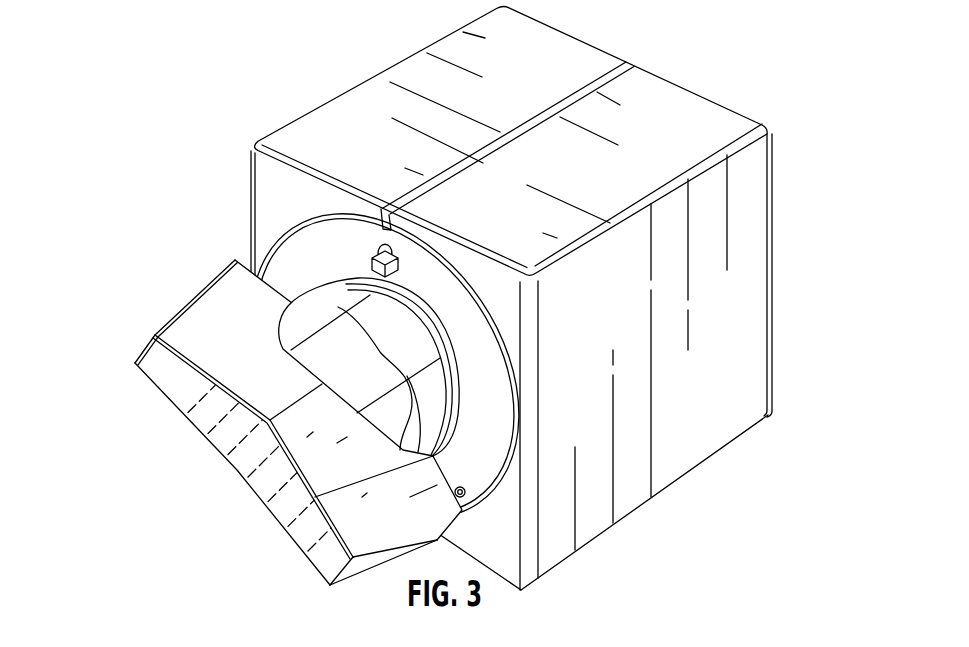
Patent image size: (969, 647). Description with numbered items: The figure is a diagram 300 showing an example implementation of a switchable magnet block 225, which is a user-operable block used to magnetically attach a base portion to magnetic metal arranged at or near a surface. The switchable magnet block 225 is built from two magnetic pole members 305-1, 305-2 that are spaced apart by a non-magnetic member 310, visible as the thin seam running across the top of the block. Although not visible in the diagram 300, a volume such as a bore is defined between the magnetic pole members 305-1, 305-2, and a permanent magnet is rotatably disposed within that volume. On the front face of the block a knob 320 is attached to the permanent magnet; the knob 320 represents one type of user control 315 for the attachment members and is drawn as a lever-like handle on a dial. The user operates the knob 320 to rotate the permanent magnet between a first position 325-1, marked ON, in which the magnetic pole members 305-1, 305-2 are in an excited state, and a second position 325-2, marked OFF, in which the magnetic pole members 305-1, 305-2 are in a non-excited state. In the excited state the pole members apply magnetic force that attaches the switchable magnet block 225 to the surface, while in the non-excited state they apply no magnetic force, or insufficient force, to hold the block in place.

The diagram 300 is at (450, 295).
The switchable magnet block 225 is at (777, 292).
The magnetic pole member 305-1 is at (363, 125).
The magnetic pole member 305-2 is at (698, 115).
The non-magnetic member 310 is at (602, 77).
The user control 315 is at (205, 400).
The knob 320 is at (369, 367).
The first position 325-1 is at (283, 262).
The second position 325-2 is at (487, 317).